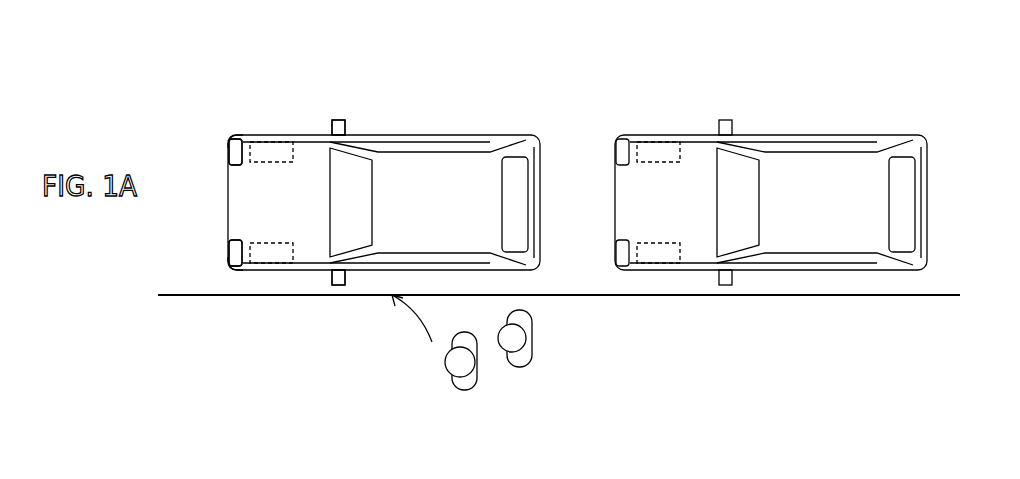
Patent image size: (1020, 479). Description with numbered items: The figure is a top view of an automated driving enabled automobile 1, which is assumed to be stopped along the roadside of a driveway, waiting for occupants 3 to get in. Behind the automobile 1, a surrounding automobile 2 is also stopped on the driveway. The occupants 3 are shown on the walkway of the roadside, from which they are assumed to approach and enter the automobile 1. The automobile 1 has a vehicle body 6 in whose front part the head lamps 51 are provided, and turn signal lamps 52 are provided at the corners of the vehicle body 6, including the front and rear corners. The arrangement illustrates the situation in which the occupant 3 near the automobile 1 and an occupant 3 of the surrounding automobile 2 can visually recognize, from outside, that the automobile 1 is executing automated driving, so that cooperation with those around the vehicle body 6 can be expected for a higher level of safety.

The automated driving enabled automobile 1 is at (427, 110).
The surrounding automobile 2 is at (803, 133).
The occupants 3 is at (478, 378).
The vehicle body 6 is at (318, 134).
The head lamps 51 is at (228, 152).
The turn signal lamps 52 is at (230, 137).